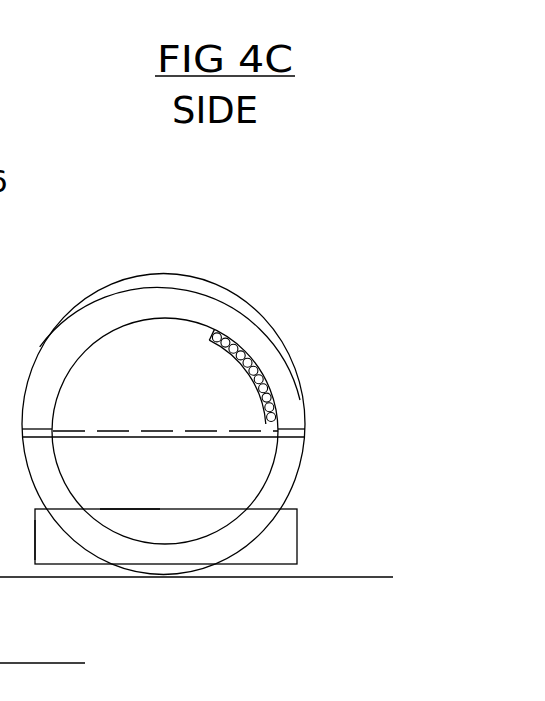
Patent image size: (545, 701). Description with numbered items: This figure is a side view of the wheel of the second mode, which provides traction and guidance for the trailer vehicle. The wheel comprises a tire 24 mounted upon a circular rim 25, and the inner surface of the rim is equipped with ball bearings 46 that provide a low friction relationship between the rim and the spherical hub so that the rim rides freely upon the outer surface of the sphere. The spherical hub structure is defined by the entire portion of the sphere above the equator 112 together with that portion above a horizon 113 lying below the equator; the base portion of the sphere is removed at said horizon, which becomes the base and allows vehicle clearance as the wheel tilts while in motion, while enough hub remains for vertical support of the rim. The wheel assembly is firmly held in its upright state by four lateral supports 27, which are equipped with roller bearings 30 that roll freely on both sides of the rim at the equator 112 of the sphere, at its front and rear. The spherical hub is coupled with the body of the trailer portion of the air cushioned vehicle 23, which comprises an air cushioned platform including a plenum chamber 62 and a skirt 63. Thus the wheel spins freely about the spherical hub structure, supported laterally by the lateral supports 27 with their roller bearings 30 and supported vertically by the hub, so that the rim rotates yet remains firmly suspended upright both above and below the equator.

The body of the trailer portion of the air cushioned vehicle 23 is at (163, 389).
The tire 24 is at (187, 324).
The circular rim 25 is at (220, 423).
The ball bearings 46 is at (312, 376).
The lateral supports 27 is at (276, 405).
The roller bearings 30 is at (234, 480).
The equator 112 is at (268, 528).
The plenum chamber 62 is at (213, 578).
The horizon 113 is at (195, 574).
The skirt 63 is at (100, 601).